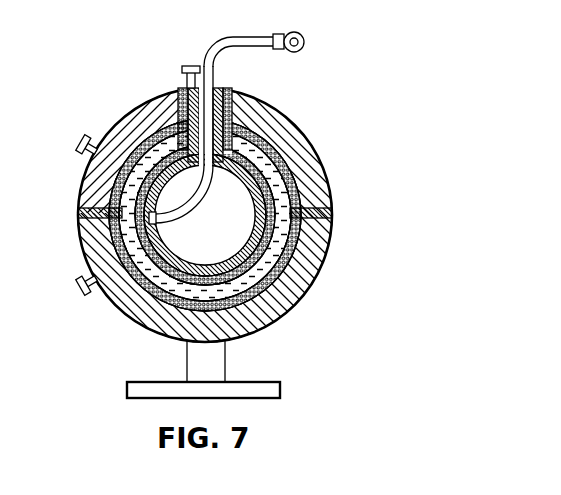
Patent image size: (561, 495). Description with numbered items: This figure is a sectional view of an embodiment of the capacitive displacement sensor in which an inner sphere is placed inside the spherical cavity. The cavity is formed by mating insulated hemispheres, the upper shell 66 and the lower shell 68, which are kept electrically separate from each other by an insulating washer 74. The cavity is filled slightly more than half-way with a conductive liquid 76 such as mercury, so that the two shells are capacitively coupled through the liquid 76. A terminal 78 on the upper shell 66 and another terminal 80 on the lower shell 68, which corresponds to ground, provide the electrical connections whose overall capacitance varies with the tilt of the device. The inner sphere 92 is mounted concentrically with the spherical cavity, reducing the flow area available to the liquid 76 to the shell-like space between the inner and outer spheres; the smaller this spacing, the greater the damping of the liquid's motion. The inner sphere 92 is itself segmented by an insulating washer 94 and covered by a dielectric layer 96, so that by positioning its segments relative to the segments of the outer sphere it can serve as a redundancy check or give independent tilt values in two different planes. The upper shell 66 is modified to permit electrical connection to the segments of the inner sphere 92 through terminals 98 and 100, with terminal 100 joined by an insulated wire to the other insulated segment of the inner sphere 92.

The upper hemisphere 66 is at (140, 113).
The lower hemisphere 68 is at (264, 316).
The insulating washer 74 is at (80, 213).
The conductive liquid 76 is at (298, 238).
The terminal 78 is at (76, 139).
The terminal 80 is at (75, 291).
The inner sphere 92 is at (253, 199).
The insulating washer 94 is at (249, 258).
The dielectric layer 96 is at (266, 170).
The terminal 98 is at (190, 63).
The terminal 100 is at (300, 32).